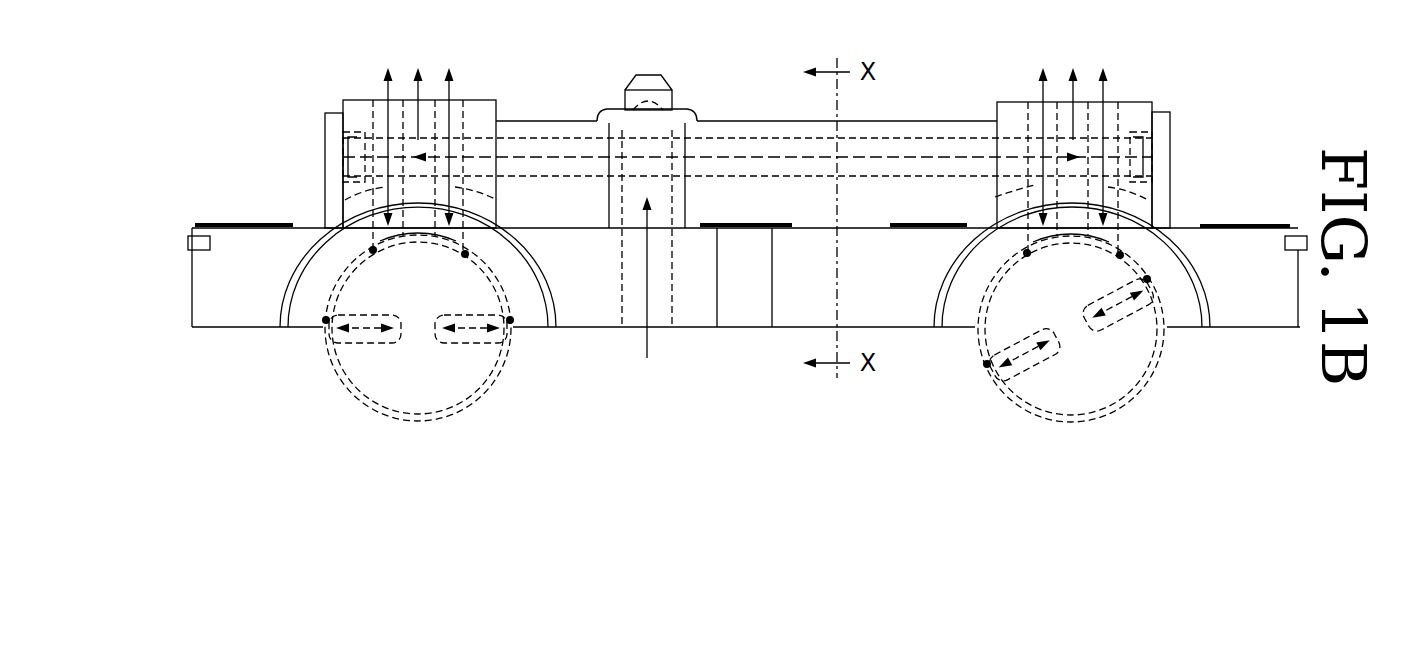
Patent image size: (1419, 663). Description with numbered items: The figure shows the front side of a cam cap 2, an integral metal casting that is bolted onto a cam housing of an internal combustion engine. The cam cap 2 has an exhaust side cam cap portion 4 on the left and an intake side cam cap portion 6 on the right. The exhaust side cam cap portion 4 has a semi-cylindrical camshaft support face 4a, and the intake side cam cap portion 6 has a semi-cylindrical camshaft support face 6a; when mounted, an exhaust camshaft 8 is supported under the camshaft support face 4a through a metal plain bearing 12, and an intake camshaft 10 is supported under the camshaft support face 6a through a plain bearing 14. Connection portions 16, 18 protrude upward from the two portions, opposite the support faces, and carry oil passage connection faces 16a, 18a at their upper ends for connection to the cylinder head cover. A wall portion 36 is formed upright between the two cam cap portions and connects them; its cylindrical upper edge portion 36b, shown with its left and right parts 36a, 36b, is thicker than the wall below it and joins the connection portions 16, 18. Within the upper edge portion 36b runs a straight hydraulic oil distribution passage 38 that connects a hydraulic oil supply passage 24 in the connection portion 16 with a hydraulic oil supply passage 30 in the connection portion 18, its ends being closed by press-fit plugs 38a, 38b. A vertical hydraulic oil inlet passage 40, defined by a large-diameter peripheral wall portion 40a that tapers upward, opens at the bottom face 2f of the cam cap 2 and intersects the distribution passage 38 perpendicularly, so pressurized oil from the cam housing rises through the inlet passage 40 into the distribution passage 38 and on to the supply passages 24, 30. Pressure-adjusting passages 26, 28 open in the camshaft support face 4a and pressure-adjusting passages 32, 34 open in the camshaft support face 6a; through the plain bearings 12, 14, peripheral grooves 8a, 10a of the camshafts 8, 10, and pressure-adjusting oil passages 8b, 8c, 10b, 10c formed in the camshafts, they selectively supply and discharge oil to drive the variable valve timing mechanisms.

The cam cap 2 is at (1216, 72).
The bottom face 2f is at (688, 330).
The exhaust side cam cap portion 4 is at (305, 318).
The camshaft support face 4a is at (422, 246).
The intake side cam cap portion 6 is at (1190, 318).
The camshaft support face 6a is at (1066, 246).
The exhaust camshaft 8 is at (488, 378).
The peripheral groove 8a is at (468, 405).
The pressure-adjusting oil passage 8b is at (386, 340).
The pressure-adjusting oil passage 8c is at (442, 340).
The intake camshaft 10 is at (1102, 390).
The peripheral groove 10a is at (1093, 422).
The pressure-adjusting oil passage 10b is at (1058, 362).
The pressure-adjusting oil passage 10c is at (1107, 330).
The plain bearing 12 is at (505, 342).
The plain bearing 14 is at (1153, 388).
The connection portion 16 is at (497, 100).
The oil passage connection face 16a is at (352, 100).
The connection portion 18 is at (999, 102).
The oil passage connection face 18a is at (1140, 102).
The hydraulic oil supply passage 24 is at (425, 112).
The pressure-adjusting passage 26 is at (345, 200).
The pressure-adjusting passage 28 is at (497, 200).
The hydraulic oil supply passage 30 is at (1081, 112).
The pressure-adjusting passage 32 is at (995, 197).
The pressure-adjusting passage 34 is at (1148, 200).
The wall portion 36 is at (864, 218).
The tank left portion 36a is at (735, 121).
The upper edge portion 36b is at (912, 121).
The hydraulic oil distribution passage 38 is at (795, 148).
The plug 38a is at (343, 155).
The plug 38b is at (1155, 158).
The hydraulic oil inlet passage 40 is at (690, 192).
The peripheral wall portion 40a is at (690, 120).